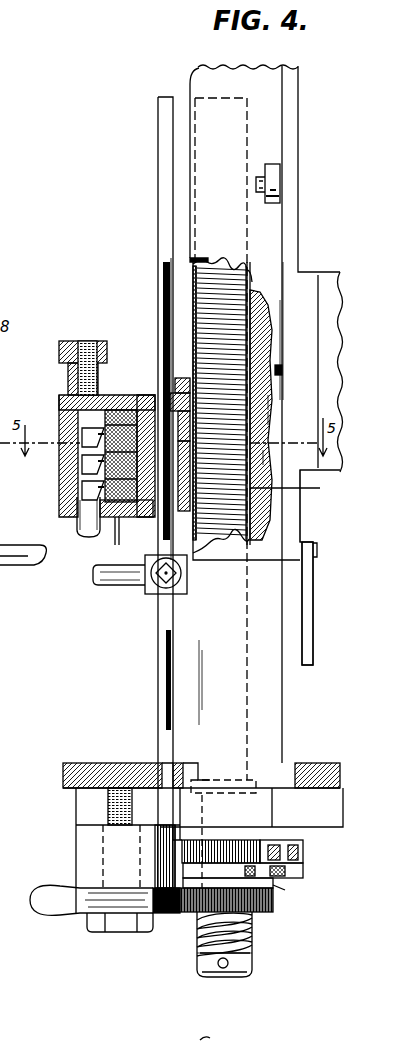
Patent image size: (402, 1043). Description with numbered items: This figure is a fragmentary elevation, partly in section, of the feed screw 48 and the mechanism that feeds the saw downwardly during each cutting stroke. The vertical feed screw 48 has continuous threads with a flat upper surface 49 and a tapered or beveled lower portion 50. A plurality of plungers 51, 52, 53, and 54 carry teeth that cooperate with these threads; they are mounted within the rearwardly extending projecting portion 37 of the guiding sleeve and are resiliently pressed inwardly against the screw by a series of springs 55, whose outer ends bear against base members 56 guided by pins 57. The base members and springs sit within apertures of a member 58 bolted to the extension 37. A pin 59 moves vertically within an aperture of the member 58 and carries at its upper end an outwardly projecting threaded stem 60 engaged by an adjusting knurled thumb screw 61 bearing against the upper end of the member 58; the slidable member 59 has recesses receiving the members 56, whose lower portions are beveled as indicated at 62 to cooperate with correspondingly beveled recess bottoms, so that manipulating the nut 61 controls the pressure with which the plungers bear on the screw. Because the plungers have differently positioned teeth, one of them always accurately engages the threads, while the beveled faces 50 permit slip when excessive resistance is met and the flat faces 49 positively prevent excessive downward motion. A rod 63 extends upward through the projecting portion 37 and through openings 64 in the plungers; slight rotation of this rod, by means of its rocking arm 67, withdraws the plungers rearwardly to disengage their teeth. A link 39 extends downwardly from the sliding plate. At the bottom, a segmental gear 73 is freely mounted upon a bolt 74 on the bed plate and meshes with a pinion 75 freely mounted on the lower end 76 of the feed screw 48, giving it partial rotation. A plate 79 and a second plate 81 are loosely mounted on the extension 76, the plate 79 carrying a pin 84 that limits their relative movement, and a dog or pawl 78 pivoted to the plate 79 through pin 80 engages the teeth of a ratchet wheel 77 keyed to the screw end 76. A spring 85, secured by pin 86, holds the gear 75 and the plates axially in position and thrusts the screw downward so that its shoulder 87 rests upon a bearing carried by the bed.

The rearwardly extending projecting portion 37 is at (127, 393).
The link 39 is at (313, 607).
The feed screw 48 is at (193, 297).
The flat upper surface 49 is at (175, 348).
The tapered or beveled lower portion 50 is at (197, 357).
The plunger 51 is at (267, 403).
The plunger 52 is at (268, 417).
The plunger 53 is at (263, 457).
The plunger 54 is at (300, 489).
The springs 55 is at (110, 383).
The base members 56 is at (97, 500).
The pins 57 is at (117, 520).
The member 58 is at (105, 556).
The pin 59 is at (80, 522).
The threaded stem 60 is at (68, 386).
The knurled thumb screw 61 is at (60, 354).
The beveled lower portion 62 is at (84, 478).
The rod 63 is at (160, 178).
The openings 64 is at (197, 410).
The rocking arm 67 is at (123, 583).
The segmental gear 73 is at (167, 913).
The bolt 74 is at (123, 920).
The pinion 75 is at (272, 900).
The lower end 76 is at (250, 963).
The ratchet wheel 77 is at (250, 840).
The dog or pawl 78 is at (270, 838).
The plate 79 is at (283, 887).
The pin 80 is at (300, 870).
The second plate 81 is at (273, 852).
The pin 84 is at (273, 890).
The spring 85 is at (197, 960).
The pin 86 is at (230, 970).
The shoulder 87 is at (252, 782).